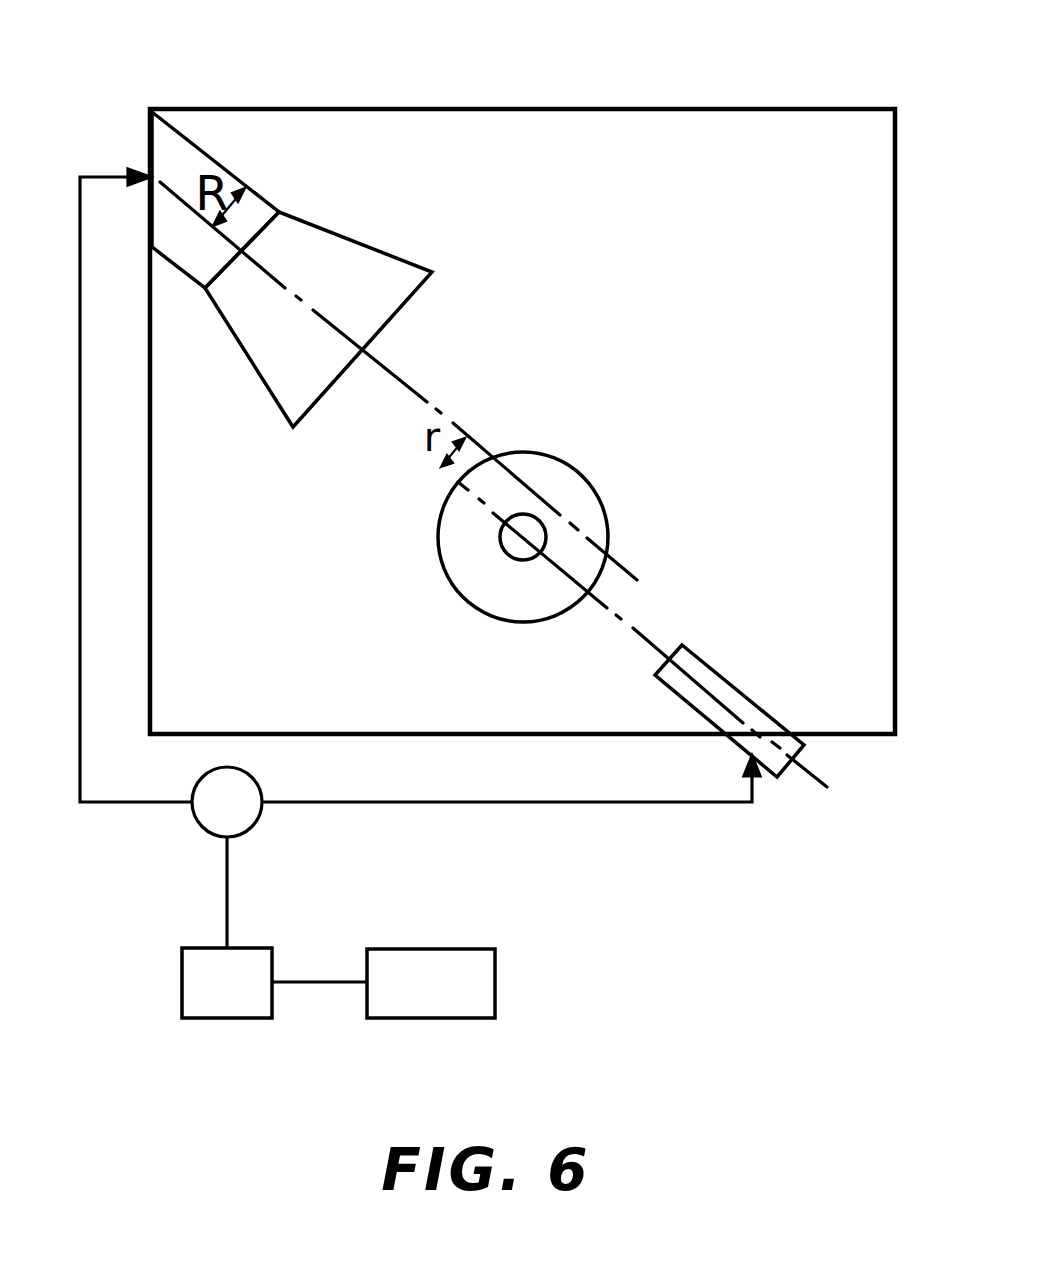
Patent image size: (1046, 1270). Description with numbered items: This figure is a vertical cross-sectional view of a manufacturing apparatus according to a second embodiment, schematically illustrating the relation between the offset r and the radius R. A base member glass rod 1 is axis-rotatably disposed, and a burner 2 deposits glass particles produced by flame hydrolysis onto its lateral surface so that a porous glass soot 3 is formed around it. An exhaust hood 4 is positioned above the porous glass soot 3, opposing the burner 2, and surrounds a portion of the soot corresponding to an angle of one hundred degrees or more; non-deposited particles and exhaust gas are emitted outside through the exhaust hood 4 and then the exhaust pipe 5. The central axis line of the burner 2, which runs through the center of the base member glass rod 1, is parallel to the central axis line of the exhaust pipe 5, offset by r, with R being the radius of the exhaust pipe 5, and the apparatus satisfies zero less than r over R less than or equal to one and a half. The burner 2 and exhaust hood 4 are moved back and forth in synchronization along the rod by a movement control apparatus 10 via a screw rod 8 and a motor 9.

The base member glass rod 1 is at (503, 553).
The burner 2 is at (745, 704).
The porous glass soot 3 is at (555, 482).
The exhaust hood 4 is at (343, 260).
The exhaust pipe 5 is at (178, 162).
The screw rod 8 is at (133, 804).
The motor 9 is at (182, 981).
The movement control apparatus 10 is at (496, 980).